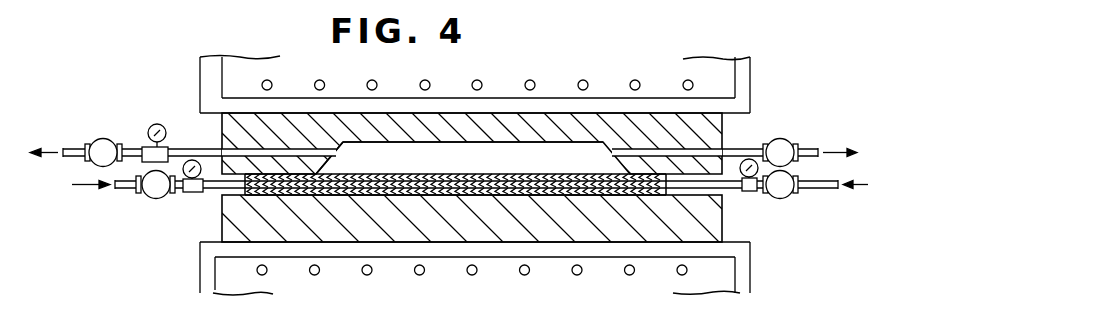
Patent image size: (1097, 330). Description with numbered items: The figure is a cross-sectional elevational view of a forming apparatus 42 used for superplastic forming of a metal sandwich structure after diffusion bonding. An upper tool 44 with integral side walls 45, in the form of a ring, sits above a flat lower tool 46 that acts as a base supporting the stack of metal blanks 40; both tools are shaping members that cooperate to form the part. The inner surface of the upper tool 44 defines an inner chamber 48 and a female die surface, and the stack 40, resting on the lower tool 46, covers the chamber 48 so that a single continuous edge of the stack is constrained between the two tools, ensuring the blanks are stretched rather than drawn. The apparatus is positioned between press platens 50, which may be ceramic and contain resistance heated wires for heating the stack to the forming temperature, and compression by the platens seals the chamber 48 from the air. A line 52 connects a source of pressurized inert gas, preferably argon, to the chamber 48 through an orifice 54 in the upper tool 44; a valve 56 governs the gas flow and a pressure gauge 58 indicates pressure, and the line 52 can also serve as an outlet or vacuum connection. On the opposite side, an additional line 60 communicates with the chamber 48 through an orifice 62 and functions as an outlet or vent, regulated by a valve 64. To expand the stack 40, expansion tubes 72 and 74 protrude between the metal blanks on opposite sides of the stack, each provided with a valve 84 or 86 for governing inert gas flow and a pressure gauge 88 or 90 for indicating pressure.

The stack of metal blanks 40 is at (505, 194).
The forming apparatus 42 is at (842, 128).
The upper tool 44 is at (587, 113).
The side walls 45 is at (333, 163).
The lower tool 46 is at (725, 232).
The inner chamber 48 is at (484, 166).
The platens 50 is at (752, 72).
The line 52 is at (177, 147).
The orifice 54 is at (218, 148).
The valve 56 is at (101, 138).
The pressure gauge 58 is at (157, 123).
The line 60 is at (740, 147).
The orifice 62 is at (660, 148).
The valve 64 is at (787, 137).
The expansion tube 72 is at (217, 190).
The expansion tube 74 is at (697, 190).
The valve 84 is at (147, 198).
The valve 86 is at (790, 198).
The pressure gauge 88 is at (187, 195).
The pressure gauge 90 is at (748, 193).